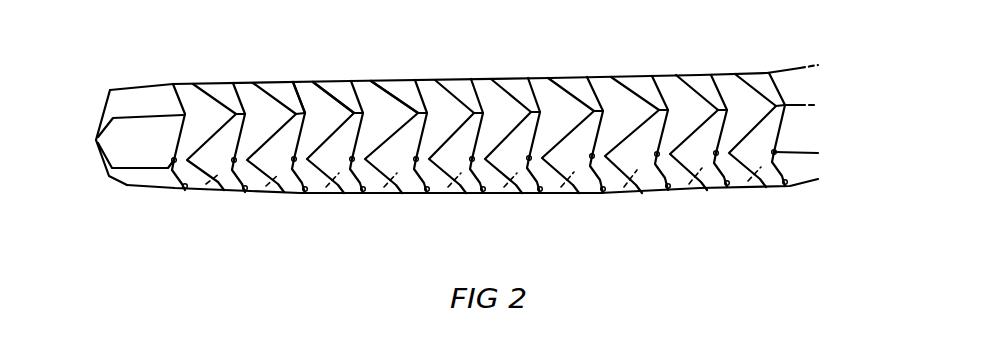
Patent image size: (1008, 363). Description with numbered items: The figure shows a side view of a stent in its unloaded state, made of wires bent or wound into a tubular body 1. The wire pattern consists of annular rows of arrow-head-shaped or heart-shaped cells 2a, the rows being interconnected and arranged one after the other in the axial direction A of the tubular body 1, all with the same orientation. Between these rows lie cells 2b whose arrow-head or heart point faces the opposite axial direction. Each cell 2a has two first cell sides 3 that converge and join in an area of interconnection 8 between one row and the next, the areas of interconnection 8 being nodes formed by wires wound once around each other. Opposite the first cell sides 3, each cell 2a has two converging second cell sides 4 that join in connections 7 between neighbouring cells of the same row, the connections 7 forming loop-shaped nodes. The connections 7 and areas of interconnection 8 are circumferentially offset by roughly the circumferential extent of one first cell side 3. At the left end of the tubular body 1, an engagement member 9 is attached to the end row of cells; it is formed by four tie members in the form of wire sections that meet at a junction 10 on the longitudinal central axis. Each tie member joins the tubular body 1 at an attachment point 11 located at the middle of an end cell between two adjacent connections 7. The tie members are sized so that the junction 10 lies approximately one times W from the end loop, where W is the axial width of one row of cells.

The tubular body 1 is at (214, 73).
The cells 2a is at (212, 128).
The cells 2b is at (224, 169).
The first cell sides 3 is at (328, 84).
The second cell sides 4 is at (366, 84).
The connections 7 is at (172, 163).
The area of interconnection 8 is at (286, 84).
The engagement member 9 is at (105, 105).
The junction 10 is at (97, 142).
The attachment points 11 is at (182, 112).
The width of one row of cells W is at (527, 55).
The axial direction A is at (153, 273).